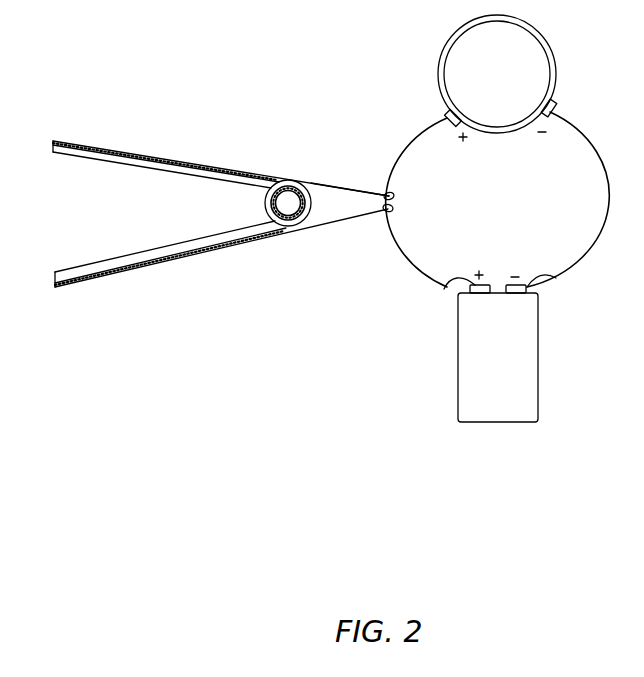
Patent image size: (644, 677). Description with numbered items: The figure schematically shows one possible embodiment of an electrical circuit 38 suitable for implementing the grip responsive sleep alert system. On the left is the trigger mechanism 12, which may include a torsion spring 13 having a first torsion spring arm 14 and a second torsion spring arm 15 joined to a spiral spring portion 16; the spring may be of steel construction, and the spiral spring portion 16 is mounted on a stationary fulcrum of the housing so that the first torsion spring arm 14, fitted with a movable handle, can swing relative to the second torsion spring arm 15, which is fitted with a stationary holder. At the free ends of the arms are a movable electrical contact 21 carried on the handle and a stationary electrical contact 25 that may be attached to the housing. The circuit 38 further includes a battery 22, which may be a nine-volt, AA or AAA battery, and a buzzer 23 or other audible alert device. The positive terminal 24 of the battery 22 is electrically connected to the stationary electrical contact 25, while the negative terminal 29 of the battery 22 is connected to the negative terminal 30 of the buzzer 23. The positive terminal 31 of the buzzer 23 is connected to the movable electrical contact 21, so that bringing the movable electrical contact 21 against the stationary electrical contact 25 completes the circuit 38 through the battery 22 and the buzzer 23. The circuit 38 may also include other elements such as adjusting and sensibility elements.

The electrical circuit 38 is at (283, 84).
The trigger mechanism 12 is at (212, 313).
The torsion spring 13 is at (281, 175).
The first torsion spring arm 14 is at (95, 152).
The second torsion spring arm 15 is at (123, 268).
The spiral spring portion 16 is at (310, 196).
The movable electrical contact 21 is at (387, 193).
The stationary electrical contact 25 is at (385, 213).
The battery 22 is at (508, 363).
The buzzer 23 is at (522, 72).
The positive terminal 24 is at (447, 284).
The negative terminal 29 is at (556, 278).
The negative terminal 30 is at (555, 108).
The positive terminal 31 is at (443, 116).